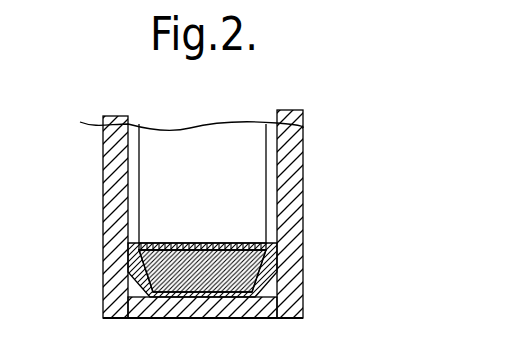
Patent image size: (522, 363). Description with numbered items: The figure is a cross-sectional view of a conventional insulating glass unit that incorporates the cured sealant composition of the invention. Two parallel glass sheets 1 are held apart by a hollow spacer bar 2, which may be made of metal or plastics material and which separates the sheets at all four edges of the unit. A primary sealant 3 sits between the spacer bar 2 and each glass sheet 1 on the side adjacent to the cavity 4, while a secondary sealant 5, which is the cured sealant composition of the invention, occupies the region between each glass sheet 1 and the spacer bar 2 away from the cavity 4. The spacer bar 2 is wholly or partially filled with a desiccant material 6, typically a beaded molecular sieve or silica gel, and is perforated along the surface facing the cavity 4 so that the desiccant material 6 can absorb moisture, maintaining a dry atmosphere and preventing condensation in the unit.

The glass sheet 1 is at (103, 127).
The spacer bar 2 is at (197, 243).
The primary sealant 3 is at (128, 255).
The cavity 4 is at (225, 152).
The secondary sealant 5 is at (252, 303).
The desiccant material 6 is at (162, 318).